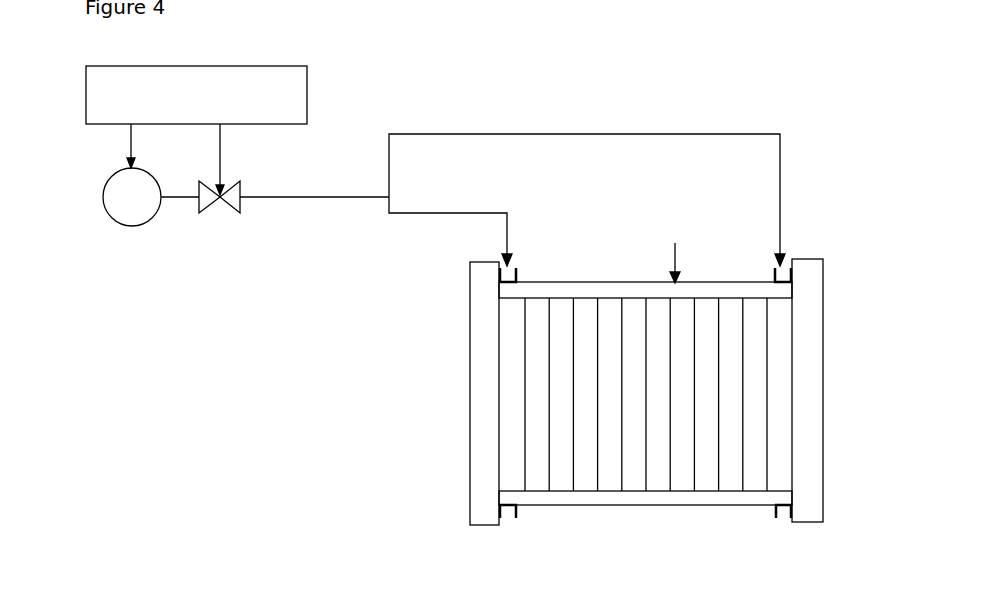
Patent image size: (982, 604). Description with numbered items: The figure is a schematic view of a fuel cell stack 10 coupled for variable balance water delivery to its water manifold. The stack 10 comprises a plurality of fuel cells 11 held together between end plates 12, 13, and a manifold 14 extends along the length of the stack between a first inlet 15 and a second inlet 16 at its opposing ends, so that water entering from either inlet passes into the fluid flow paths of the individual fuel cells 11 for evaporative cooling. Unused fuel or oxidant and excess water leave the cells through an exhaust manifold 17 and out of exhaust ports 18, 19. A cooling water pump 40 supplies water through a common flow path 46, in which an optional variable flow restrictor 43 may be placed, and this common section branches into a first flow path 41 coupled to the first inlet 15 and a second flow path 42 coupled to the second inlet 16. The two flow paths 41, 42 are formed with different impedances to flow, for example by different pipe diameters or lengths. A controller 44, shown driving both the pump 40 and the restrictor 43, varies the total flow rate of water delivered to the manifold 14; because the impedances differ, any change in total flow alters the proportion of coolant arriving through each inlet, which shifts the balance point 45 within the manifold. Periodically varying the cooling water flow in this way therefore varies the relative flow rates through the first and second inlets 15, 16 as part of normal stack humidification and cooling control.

The fuel cell stack 10 is at (416, 332).
The fuel cells 11 is at (598, 300).
The end plate 12 is at (480, 379).
The end plate 13 is at (813, 373).
The manifold 14 is at (548, 287).
The first inlet 15 is at (515, 270).
The second inlet 16 is at (773, 270).
The exhaust manifold 17 is at (647, 498).
The exhaust port 18 is at (517, 510).
The exhaust port 19 is at (775, 510).
The cooling water pump 40 is at (101, 205).
The first flow path 41 is at (445, 214).
The second flow path 42 is at (604, 133).
The variable flow restrictor 43 is at (222, 165).
The controller 44 is at (86, 90).
The balance point 45 is at (676, 253).
The common flow path 46 is at (355, 198).